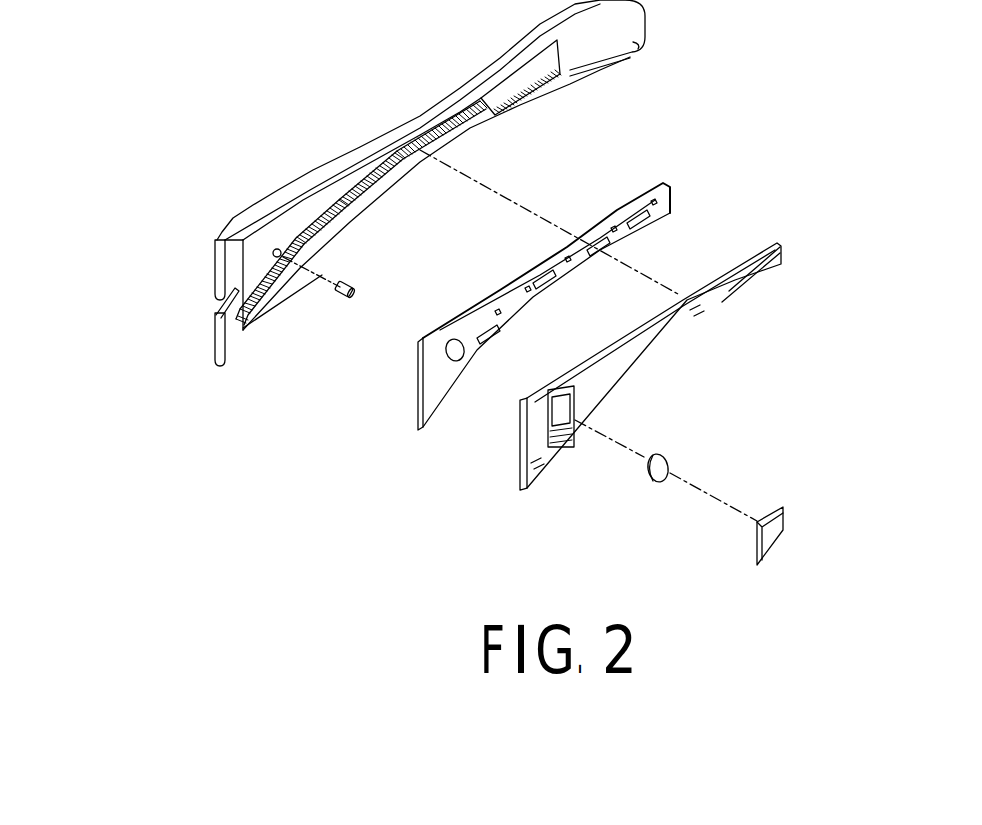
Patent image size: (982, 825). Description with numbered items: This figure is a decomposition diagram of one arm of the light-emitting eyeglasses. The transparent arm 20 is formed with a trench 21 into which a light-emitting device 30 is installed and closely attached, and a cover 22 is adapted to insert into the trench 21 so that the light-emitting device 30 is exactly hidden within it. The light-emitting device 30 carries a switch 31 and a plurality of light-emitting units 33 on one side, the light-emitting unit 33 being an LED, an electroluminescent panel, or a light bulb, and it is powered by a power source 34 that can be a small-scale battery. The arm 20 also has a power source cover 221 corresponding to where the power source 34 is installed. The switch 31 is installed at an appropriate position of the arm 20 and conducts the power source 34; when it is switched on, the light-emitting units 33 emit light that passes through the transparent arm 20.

The transparent arm 20 is at (313, 170).
The trench 21 is at (254, 259).
The cover 22 is at (667, 335).
The light-emitting device 30 is at (469, 378).
The switch 31 is at (338, 292).
The light-emitting unit 33 is at (458, 361).
The power source 34 is at (668, 464).
The power source cover 221 is at (768, 532).